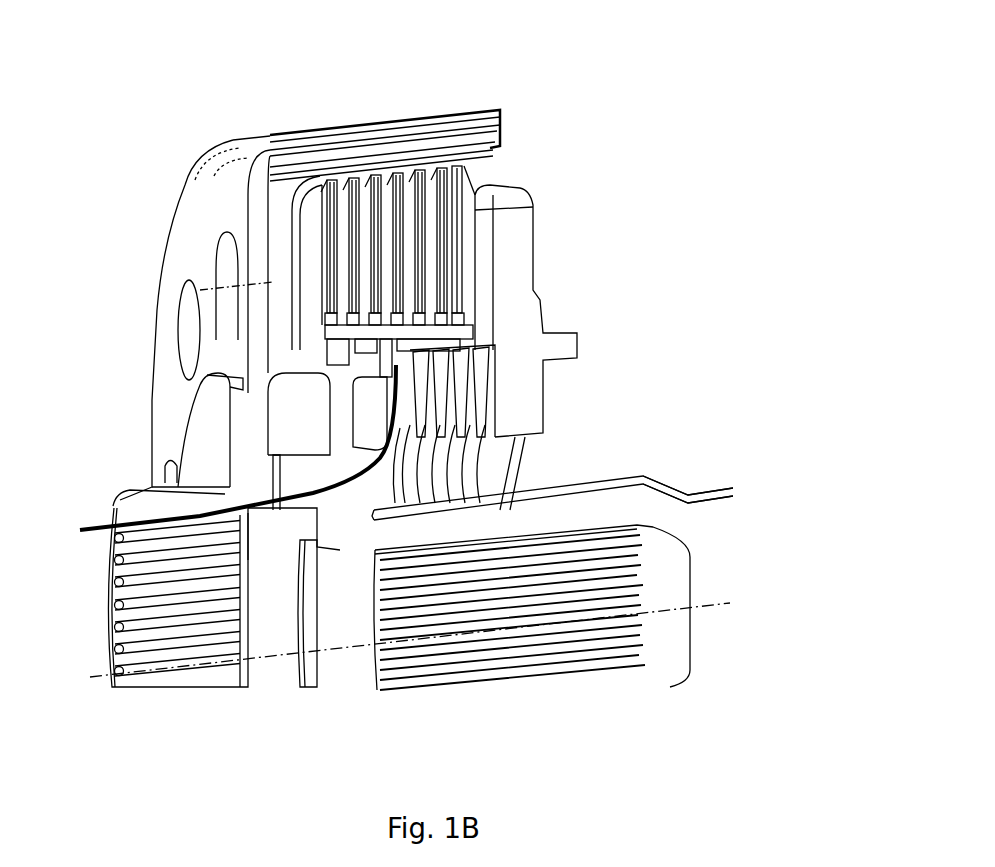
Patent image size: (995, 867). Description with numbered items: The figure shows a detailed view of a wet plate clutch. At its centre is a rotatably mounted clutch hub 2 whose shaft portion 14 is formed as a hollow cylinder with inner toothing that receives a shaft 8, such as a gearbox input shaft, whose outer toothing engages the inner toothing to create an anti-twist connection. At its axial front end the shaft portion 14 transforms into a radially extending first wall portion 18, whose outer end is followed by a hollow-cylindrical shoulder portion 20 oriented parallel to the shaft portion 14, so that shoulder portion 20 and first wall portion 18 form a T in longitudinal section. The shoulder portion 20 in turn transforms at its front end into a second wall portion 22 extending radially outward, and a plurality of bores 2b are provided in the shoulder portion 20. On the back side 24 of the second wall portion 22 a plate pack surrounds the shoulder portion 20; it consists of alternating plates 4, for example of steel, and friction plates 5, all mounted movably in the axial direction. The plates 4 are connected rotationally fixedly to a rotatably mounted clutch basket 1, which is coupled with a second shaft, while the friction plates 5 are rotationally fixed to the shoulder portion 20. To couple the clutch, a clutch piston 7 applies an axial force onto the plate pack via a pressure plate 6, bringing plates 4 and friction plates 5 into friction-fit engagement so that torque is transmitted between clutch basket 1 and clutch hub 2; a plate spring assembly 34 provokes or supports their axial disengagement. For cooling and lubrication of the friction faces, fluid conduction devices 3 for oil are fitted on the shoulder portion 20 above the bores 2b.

The clutch basket 1 is at (196, 228).
The clutch hub 2 is at (310, 220).
The fluid conduction device 3 is at (396, 349).
The plate 4 is at (340, 212).
The friction plate 5 is at (368, 212).
The pressure plate 6 is at (460, 200).
The clutch piston 7 is at (497, 195).
The shaft 8 is at (546, 507).
The shaft portion 14 is at (630, 497).
The first wall portion 18 is at (340, 395).
The shoulder portion 20 is at (462, 334).
The second wall portion 22 is at (330, 348).
The back side 24 is at (320, 253).
The plate spring assembly 34 is at (470, 393).
The bore 2b is at (209, 459).